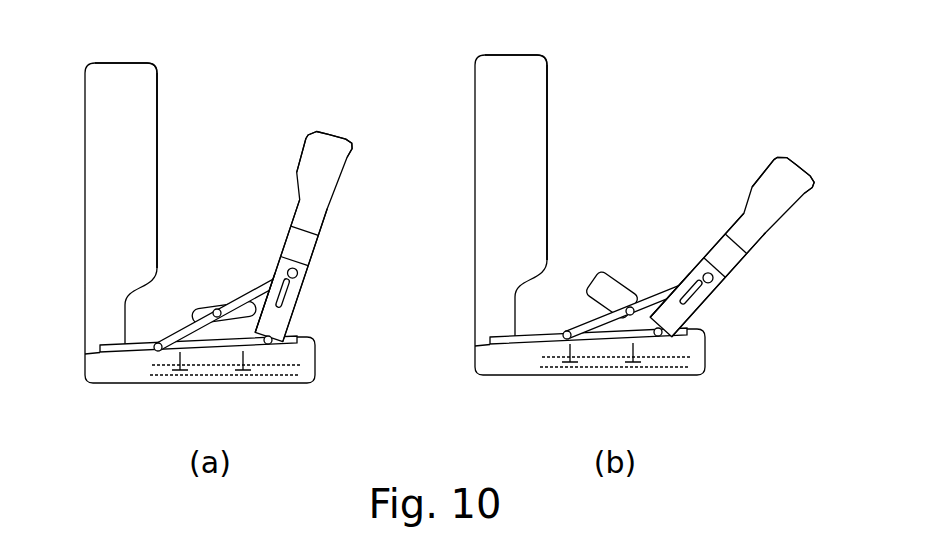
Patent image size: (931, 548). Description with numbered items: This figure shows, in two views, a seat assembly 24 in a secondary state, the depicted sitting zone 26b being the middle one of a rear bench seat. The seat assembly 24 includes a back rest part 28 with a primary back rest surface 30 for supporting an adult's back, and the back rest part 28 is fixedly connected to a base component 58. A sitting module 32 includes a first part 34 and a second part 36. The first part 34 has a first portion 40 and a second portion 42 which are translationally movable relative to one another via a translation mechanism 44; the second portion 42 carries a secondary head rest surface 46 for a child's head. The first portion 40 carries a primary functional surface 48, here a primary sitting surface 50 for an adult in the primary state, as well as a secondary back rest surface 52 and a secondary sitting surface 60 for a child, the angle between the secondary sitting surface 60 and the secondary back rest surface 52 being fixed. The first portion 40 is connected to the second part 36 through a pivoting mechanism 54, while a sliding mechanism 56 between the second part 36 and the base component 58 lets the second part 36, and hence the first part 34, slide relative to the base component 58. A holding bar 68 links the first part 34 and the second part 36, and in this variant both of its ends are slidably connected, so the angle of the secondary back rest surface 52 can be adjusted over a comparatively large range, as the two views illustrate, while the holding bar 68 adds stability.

The seat assembly 24 is at (347, 91).
The sitting zone 26b is at (254, 97).
The back rest part 28 is at (106, 188).
The primary back rest surface 30 is at (161, 110).
The sitting module 32 is at (329, 355).
The first part 34 is at (332, 175).
The second part 36 is at (100, 349).
The first portion 40 is at (282, 315).
The second portion 42 is at (519, 239).
The translation mechanism 44 is at (324, 247).
The secondary head rest surface 46 is at (295, 151).
The primary functional surface 48 is at (315, 270).
The primary sitting surface 50 is at (489, 293).
The secondary back rest surface 52 is at (284, 207).
The pivoting mechanism 54 is at (305, 356).
The sliding mechanism 56 is at (309, 379).
The base component 58 is at (106, 364).
The secondary sitting surface 60 is at (230, 301).
The holding bar 68 is at (215, 320).